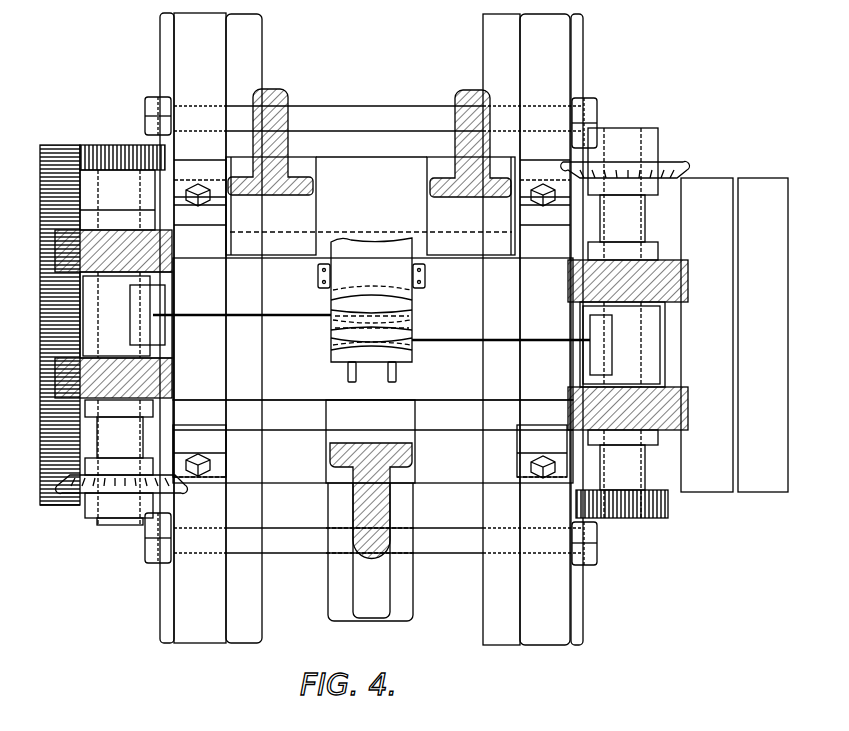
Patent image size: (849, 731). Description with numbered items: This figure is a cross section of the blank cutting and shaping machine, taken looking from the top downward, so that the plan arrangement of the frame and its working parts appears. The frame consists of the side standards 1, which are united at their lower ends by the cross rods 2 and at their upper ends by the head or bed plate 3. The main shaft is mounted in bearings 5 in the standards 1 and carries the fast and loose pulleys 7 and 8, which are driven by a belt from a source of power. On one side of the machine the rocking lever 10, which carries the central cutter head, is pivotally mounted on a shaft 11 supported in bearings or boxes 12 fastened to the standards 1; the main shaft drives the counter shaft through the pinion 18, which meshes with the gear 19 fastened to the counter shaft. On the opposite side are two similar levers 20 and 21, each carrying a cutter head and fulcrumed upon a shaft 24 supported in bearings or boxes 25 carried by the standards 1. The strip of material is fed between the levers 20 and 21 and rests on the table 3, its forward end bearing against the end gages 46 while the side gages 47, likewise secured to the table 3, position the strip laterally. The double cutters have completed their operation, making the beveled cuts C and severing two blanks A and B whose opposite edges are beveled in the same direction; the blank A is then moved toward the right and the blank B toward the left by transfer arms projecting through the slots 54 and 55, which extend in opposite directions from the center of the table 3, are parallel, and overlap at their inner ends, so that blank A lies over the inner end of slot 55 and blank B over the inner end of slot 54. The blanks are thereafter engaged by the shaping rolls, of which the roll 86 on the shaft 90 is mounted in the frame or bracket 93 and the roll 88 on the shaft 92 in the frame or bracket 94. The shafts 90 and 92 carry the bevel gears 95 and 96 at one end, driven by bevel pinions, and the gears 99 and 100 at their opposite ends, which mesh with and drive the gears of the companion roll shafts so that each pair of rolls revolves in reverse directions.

The side standards 1 is at (371, 329).
The cross rods 2 is at (378, 330).
The head or bed plate 3 is at (373, 329).
The bearings 5 is at (55, 324).
The fast pulley 7 is at (707, 335).
The loose pulley 8 is at (763, 335).
The rocking lever 10 is at (408, 605).
The shaft 11 is at (373, 441).
The bearings or boxes 12 is at (214, 473).
The pinion 18 is at (80, 332).
The gear 19 is at (38, 500).
The lever 20 is at (276, 100).
The lever 21 is at (454, 100).
The shaft 24 is at (370, 206).
The bearings or boxes 25 is at (217, 185).
The end gages 46 is at (380, 378).
The side gages 47 is at (318, 276).
The slot 54 is at (243, 314).
The slot 55 is at (549, 340).
The shaping roll 86 is at (85, 296).
The shaping roll 88 is at (660, 326).
The shaft 90 is at (119, 462).
The shaft 92 is at (623, 194).
The frame or bracket 93 is at (60, 390).
The frame or bracket 94 is at (679, 428).
The bevel gear 95 is at (80, 492).
The bevel gear 96 is at (684, 160).
The gear 99 is at (82, 146).
The gear 100 is at (668, 516).
The blank A is at (410, 344).
The blank B is at (330, 320).
The beveled cut C is at (412, 327).